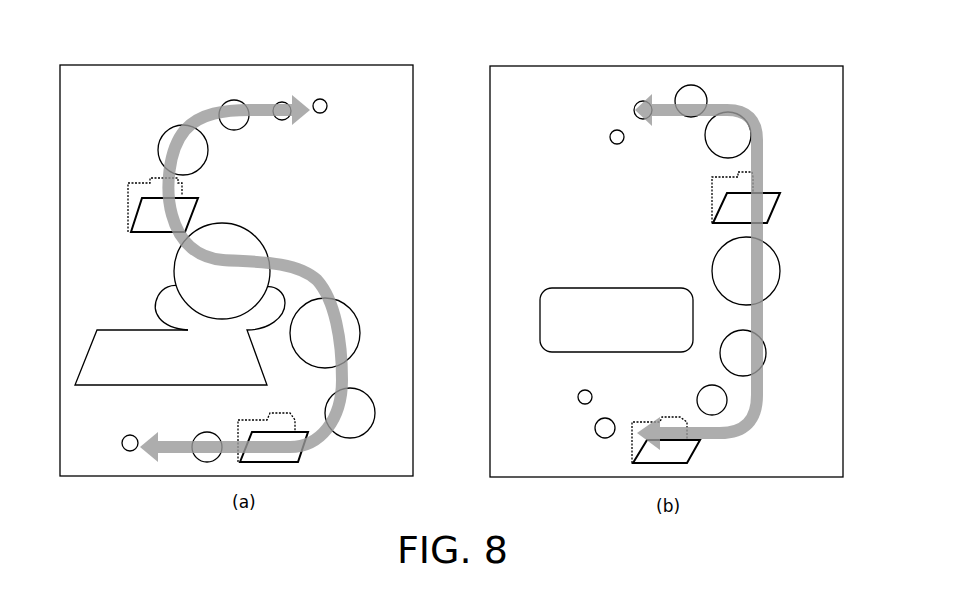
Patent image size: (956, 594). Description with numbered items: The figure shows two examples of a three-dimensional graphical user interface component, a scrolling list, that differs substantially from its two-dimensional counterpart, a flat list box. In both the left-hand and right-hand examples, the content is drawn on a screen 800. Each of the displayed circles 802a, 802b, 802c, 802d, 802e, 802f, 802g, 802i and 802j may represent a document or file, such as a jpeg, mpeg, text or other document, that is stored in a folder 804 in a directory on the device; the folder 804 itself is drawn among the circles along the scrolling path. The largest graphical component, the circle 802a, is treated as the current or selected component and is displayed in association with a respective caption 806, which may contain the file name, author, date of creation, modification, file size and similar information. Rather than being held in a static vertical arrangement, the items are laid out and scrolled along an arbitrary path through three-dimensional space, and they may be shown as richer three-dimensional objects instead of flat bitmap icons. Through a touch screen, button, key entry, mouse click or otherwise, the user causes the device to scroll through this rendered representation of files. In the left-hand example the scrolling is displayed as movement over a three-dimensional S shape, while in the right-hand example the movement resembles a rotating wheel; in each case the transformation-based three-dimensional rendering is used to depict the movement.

The screen 800 is at (517, 52).
The circle 802a is at (262, 244).
The circle 802b is at (163, 140).
The circle 802c is at (222, 103).
The circle 802d is at (283, 121).
The circle 802e is at (328, 106).
The circle 802f is at (354, 314).
The circle 802g is at (363, 435).
The circle 802i is at (578, 399).
The circle 802j is at (121, 447).
The folder 804 is at (200, 217).
The caption 806 is at (96, 386).